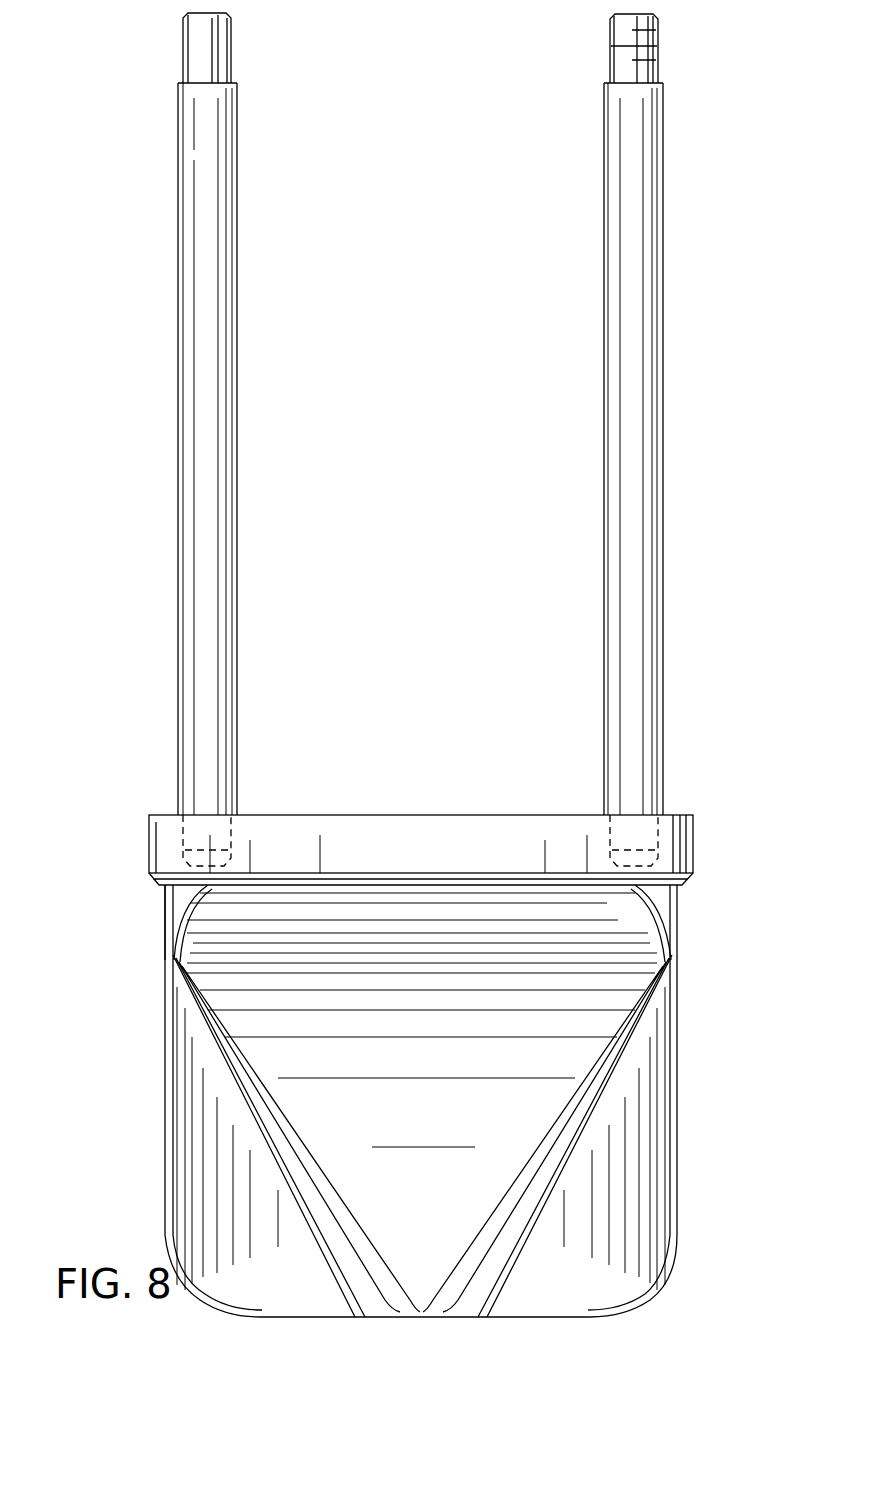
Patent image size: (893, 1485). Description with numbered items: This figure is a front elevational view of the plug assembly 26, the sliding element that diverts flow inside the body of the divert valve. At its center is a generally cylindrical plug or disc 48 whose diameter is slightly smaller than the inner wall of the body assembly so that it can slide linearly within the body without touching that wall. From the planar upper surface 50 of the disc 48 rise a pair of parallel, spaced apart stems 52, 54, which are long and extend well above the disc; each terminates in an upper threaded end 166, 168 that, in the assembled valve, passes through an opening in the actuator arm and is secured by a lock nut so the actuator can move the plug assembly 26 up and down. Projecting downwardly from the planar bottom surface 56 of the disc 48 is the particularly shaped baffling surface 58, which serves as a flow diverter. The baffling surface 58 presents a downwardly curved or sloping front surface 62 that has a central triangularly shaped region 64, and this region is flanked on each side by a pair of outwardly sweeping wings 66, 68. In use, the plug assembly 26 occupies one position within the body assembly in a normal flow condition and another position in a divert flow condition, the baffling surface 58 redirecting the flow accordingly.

The plug assembly 26 is at (431, 150).
The disc 48 is at (432, 856).
The upper surface 50 is at (383, 814).
The stem 52 is at (643, 497).
The stem 54 is at (222, 507).
The bottom surface 56 is at (165, 905).
The baffling surface 58 is at (700, 1010).
The front surface 62 is at (525, 980).
The triangularly shaped region 64 is at (432, 1124).
The wing 66 is at (215, 1200).
The wing 68 is at (628, 1222).
The upper threaded end 166 is at (645, 60).
The upper threaded end 168 is at (217, 62).